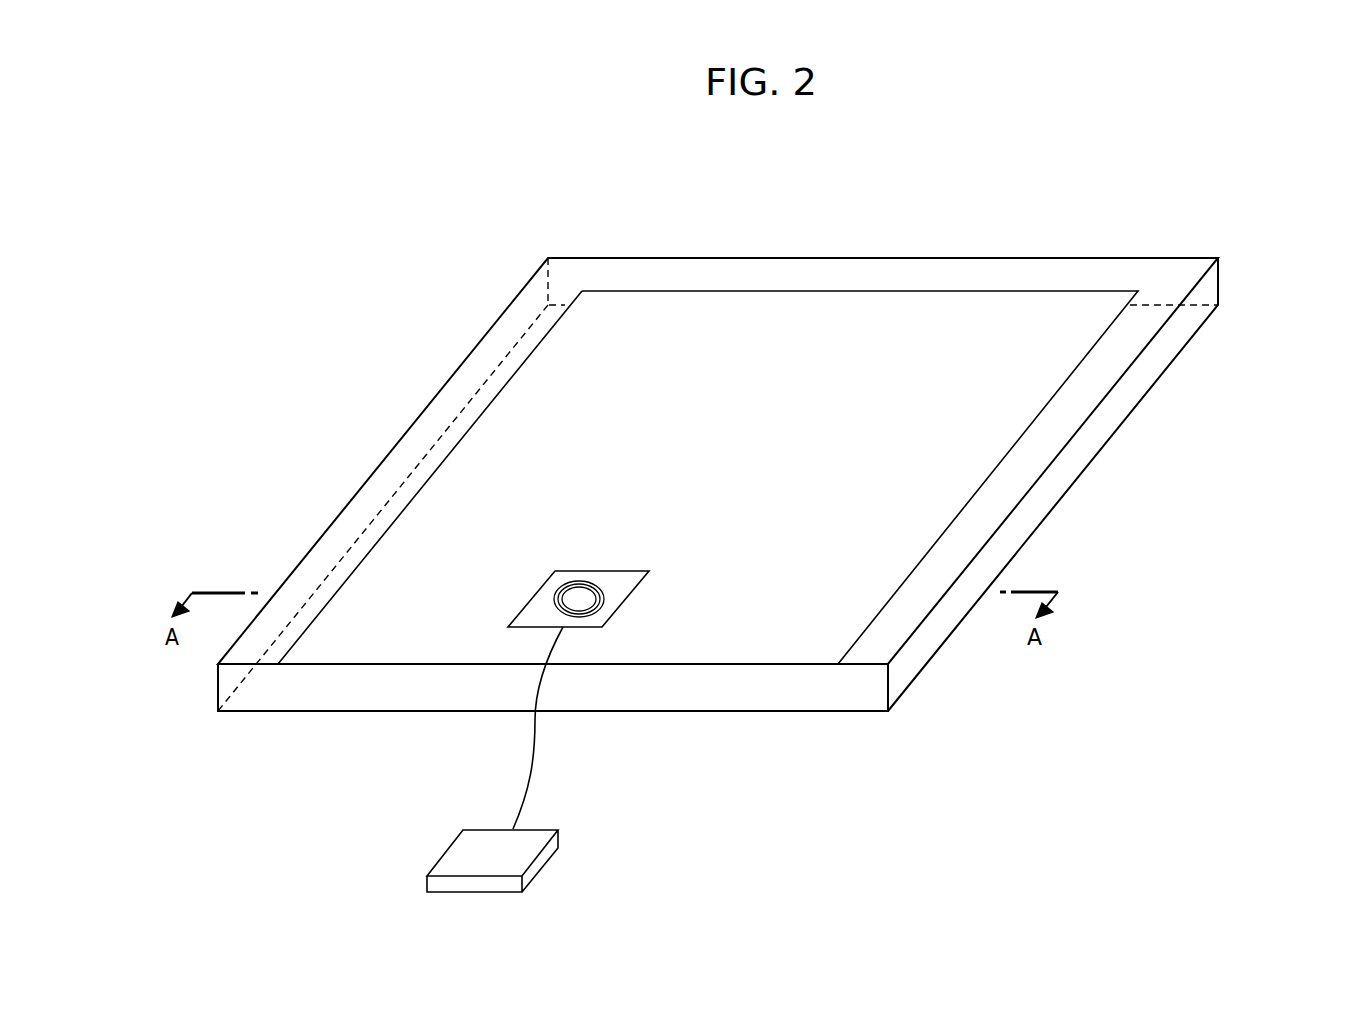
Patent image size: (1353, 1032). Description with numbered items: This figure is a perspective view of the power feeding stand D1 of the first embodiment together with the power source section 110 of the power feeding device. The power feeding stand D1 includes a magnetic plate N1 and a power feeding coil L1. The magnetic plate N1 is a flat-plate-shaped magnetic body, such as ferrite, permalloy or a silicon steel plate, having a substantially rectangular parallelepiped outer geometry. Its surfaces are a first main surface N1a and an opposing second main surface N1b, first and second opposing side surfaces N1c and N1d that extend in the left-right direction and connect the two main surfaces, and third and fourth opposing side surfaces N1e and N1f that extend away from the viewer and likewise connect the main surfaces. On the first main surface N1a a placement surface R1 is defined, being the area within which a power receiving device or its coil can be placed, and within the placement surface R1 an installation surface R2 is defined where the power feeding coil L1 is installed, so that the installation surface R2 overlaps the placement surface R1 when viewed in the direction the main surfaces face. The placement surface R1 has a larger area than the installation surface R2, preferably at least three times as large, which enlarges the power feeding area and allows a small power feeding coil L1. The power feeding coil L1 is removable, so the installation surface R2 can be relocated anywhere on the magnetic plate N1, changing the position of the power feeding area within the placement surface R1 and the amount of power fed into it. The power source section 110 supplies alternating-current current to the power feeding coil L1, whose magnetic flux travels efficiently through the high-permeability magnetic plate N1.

The power feeding stand D1 is at (756, 457).
The magnetic plate N1 is at (756, 499).
The first main surface N1a is at (1180, 280).
The second main surface N1b is at (403, 687).
The first side surface N1c is at (395, 477).
The second side surface N1d is at (1143, 372).
The third side surface N1e is at (803, 693).
The fourth side surface N1f is at (1148, 280).
The placement surface R1 is at (863, 290).
The installation surface R2 is at (588, 570).
The power feeding coil L1 is at (605, 603).
The power source section 110 is at (537, 836).